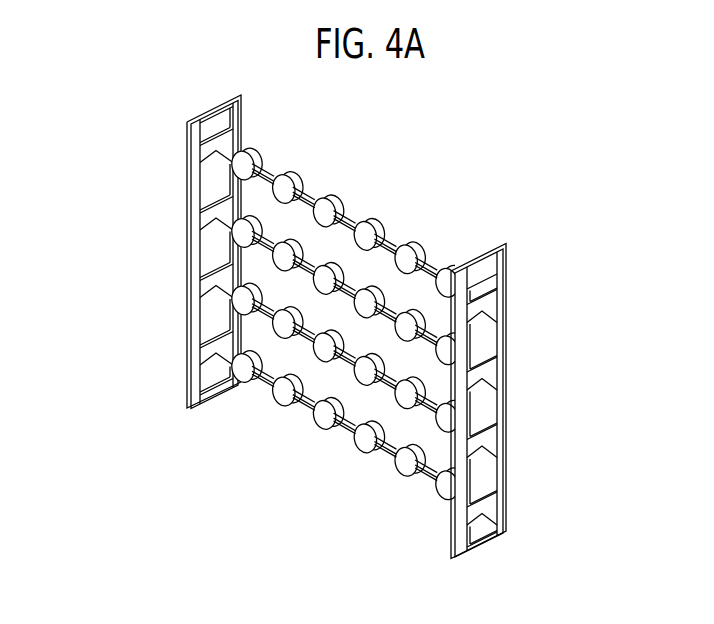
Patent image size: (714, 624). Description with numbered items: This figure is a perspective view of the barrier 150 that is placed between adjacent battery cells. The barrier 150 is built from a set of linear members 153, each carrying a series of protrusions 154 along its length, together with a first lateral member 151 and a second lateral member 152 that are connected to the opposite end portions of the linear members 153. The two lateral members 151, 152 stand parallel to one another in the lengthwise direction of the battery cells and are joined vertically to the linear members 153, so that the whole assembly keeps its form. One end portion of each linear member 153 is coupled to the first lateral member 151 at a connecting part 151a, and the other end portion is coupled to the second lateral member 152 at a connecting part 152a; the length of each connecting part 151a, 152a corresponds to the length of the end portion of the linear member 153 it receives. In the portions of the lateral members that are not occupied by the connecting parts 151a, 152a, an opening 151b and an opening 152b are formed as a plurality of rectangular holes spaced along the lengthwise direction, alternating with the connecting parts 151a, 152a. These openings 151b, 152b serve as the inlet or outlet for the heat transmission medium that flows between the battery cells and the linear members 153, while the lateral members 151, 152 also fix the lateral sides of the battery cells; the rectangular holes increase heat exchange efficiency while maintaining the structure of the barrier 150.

The barrier 150 is at (346, 327).
The first lateral member 151 is at (139, 252).
The connecting part 151a is at (205, 222).
The opening 151b is at (215, 257).
The second lateral member 152 is at (553, 401).
The connecting part 152a is at (490, 363).
The opening 152b is at (487, 394).
The linear member 153 is at (380, 455).
The protrusion 154 is at (410, 468).